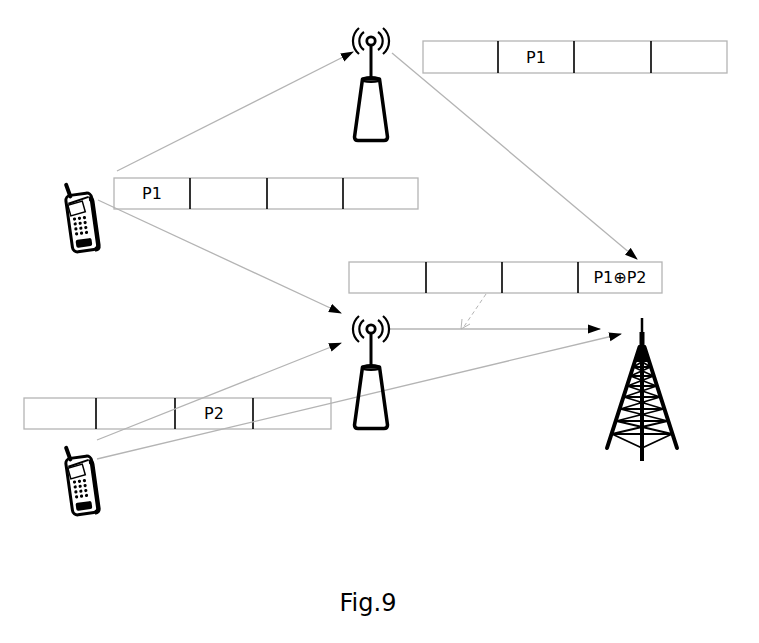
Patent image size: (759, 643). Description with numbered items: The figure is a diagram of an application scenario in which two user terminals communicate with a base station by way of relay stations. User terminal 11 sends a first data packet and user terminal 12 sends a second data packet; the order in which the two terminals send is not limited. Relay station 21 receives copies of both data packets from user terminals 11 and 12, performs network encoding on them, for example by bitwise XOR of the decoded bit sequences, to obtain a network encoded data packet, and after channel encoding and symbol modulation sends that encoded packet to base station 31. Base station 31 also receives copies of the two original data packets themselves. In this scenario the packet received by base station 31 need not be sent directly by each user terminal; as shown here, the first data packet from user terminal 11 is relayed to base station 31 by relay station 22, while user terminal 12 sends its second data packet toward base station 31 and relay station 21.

The user terminal 11 is at (81, 233).
The user terminal 12 is at (81, 496).
The relay station 21 is at (371, 389).
The relay station 22 is at (371, 102).
The base station 31 is at (642, 406).